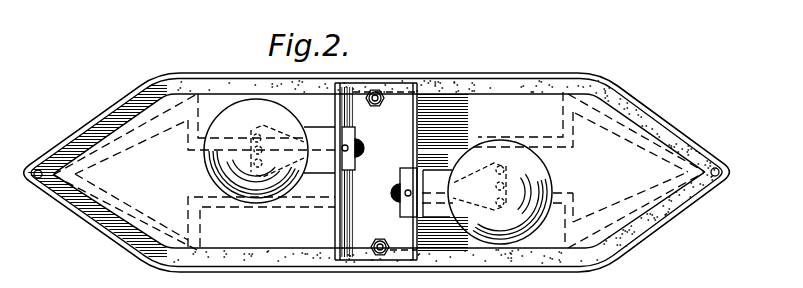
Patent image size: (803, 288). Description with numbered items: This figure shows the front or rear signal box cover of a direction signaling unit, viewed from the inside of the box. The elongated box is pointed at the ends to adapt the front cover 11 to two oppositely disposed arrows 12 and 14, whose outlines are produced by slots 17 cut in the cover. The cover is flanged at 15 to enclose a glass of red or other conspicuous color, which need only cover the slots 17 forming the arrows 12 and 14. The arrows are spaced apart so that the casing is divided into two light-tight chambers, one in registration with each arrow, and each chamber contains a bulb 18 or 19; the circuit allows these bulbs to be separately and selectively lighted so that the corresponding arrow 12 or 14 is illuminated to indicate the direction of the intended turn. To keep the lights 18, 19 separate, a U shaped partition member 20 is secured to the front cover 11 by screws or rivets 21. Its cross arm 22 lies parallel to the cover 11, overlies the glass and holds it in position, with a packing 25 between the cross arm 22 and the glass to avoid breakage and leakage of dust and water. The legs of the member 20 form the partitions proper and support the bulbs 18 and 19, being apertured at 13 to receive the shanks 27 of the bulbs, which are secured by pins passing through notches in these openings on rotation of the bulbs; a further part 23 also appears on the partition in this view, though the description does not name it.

The front cover 11 is at (577, 73).
The arrow 12 is at (622, 196).
The aperture 13 is at (413, 166).
The arrow 14 is at (230, 208).
The flange 15 is at (643, 102).
The slots 17 is at (318, 207).
The bulb 18 is at (245, 97).
The bulb 19 is at (496, 140).
The partition member 20 is at (414, 120).
The screws 21 is at (378, 97).
The cross arm 22 is at (370, 207).
The contact spring 23 is at (351, 140).
The packing 25 is at (82, 203).
The shank 27 is at (405, 210).